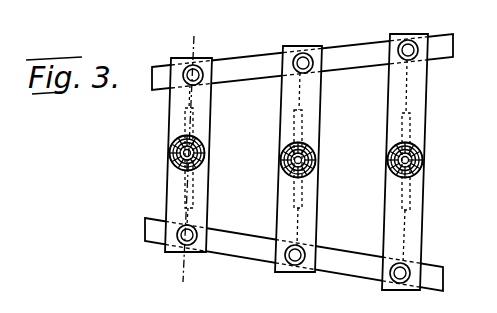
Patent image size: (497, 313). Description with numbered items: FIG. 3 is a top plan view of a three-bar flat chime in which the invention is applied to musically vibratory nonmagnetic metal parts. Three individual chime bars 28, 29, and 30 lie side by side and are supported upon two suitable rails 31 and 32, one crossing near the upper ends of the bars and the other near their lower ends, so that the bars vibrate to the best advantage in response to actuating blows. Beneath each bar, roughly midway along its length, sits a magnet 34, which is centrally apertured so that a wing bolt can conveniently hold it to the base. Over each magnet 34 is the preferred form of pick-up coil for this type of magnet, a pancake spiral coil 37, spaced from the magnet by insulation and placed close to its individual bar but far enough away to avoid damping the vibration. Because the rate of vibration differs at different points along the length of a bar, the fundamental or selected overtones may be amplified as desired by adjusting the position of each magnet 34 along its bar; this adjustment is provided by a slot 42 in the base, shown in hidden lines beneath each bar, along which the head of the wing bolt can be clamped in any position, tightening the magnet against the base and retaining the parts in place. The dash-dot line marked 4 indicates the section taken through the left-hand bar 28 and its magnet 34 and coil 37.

The section line 4- 4 is at (194, 33).
The chime bar 28 is at (205, 103).
The chime bar 29 is at (310, 92).
The chime bar 30 is at (420, 88).
The rail 31 is at (240, 62).
The rail 32 is at (240, 247).
The magnet 34 is at (169, 158).
The pancake spiral coil 37 is at (172, 141).
The slot 42 is at (186, 196).